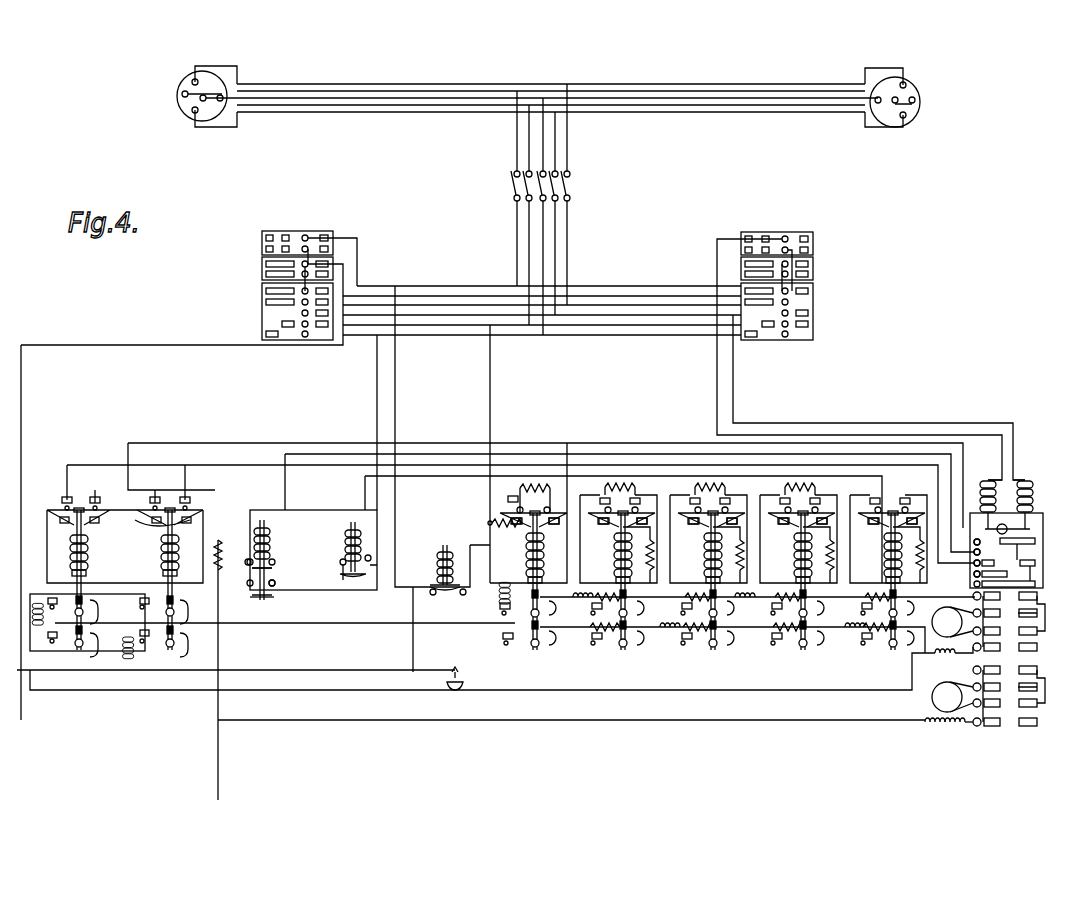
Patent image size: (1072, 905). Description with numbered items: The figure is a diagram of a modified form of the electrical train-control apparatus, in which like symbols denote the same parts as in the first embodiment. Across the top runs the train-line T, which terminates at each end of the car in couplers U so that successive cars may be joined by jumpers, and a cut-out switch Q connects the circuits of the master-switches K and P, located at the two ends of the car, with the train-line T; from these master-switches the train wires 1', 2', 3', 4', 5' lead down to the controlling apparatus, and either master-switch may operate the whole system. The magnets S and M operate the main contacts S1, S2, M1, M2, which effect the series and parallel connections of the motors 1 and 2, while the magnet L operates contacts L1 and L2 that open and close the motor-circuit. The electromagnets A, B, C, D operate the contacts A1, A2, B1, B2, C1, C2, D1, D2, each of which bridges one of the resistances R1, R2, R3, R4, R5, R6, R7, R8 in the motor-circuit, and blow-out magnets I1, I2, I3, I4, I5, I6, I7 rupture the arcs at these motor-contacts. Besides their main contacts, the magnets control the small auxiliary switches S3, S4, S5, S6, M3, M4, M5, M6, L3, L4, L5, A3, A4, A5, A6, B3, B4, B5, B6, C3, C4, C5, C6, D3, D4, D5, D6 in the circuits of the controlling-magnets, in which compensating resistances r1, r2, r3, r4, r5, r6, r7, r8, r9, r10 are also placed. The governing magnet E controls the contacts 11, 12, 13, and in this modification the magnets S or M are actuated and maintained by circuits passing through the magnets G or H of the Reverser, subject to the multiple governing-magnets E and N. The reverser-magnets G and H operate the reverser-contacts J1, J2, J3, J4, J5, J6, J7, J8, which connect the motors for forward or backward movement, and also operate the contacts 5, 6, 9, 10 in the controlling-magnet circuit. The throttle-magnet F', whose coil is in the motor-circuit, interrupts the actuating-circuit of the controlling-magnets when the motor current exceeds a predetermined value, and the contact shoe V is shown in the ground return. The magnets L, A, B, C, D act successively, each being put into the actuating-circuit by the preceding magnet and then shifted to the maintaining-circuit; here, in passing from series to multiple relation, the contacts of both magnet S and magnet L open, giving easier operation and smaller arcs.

The train-line T is at (551, 87).
The couplers U is at (549, 96).
The cut-out switch Q is at (549, 209).
The master-switch K is at (189, 275).
The master-switch P is at (775, 273).
The train wire 1' is at (402, 428).
The train wire 2' is at (487, 447).
The train wire 3' is at (371, 415).
The train wire 4' is at (853, 385).
The train wire 5' is at (876, 391).
The magnet S is at (125, 579).
The magnet M is at (169, 579).
The multiple governing-magnet N is at (312, 555).
The automatic multiple governing magnet E is at (356, 551).
The throttle-magnet F' is at (436, 600).
The contact shoe V is at (459, 678).
The reverser-magnet G is at (603, 652).
The reverser-magnet H is at (1031, 505).
The magnet L is at (528, 578).
The electromagnet A is at (618, 572).
The electromagnet B is at (708, 572).
The electromagnet C is at (798, 572).
The electromagnet D is at (888, 572).
The motor 1 is at (952, 630).
The motor 2 is at (949, 702).
The reverser Reverser is at (1000, 628).
The contact 11 is at (262, 604).
The contact 12 is at (276, 584).
The contact 13 is at (275, 570).
The reverser contact 5 is at (972, 549).
The contact 6 is at (971, 537).
The contact 9 is at (966, 582).
The contact 10 is at (962, 570).
The compensating resistance r1 is at (535, 494).
The compensating resistance r2 is at (620, 484).
The compensating resistance r3 is at (710, 484).
The compensating resistance r4 is at (800, 484).
The compensating resistance r5 is at (646, 555).
The compensating resistance r6 is at (736, 555).
The compensating resistance r7 is at (826, 555).
The compensating resistance r8 is at (915, 555).
The compensating resistance r9 is at (224, 555).
The compensating resistance r10 is at (507, 529).
The resistance R1 is at (612, 580).
The resistance R2 is at (597, 628).
The resistance R3 is at (689, 590).
The resistance R4 is at (715, 620).
The resistance R5 is at (781, 590).
The resistance R6 is at (775, 622).
The resistance R7 is at (872, 590).
The resistance R8 is at (894, 622).
The blow-out magnet I1 is at (574, 605).
The blow-out magnet I2 is at (666, 635).
The blow-out magnet I3 is at (745, 605).
The blow-out magnet I4 is at (848, 638).
The blow-out magnet I5 is at (22, 614).
The blow-out magnet I6 is at (126, 651).
The blow-out magnet I7 is at (509, 593).
The reverser-contact J1 is at (1005, 717).
The reverser-contact J2 is at (1005, 698).
The reverser-contact J3 is at (1005, 682).
The reverser-contact J4 is at (1005, 665).
The reverser-contact J5 is at (1005, 642).
The reverser-contact J6 is at (1005, 626).
The reverser-contact J7 is at (1005, 608).
The reverser-contact J8 is at (1005, 591).
The main contact S1 is at (59, 601).
The main contact S2 is at (47, 644).
The auxiliary switch S3 is at (59, 526).
The auxiliary switch S4 is at (60, 499).
The auxiliary switch S5 is at (99, 526).
The auxiliary switch S6 is at (102, 499).
The main contact M1 is at (133, 601).
The main contact M2 is at (152, 634).
The auxiliary switch M3 is at (144, 525).
The auxiliary switch M4 is at (146, 499).
The auxiliary switch M5 is at (194, 526).
The auxiliary switch M6 is at (193, 499).
The contact L1 is at (512, 608).
The contact L2 is at (497, 642).
The auxiliary switch L3 is at (535, 535).
The auxiliary switch L4 is at (506, 494).
The auxiliary switch L5 is at (556, 528).
The contact A1 is at (590, 610).
The contact A2 is at (588, 643).
The auxiliary switch A3 is at (596, 526).
The auxiliary switch A4 is at (608, 495).
The auxiliary switch A5 is at (654, 526).
The auxiliary switch A6 is at (644, 495).
The contact B1 is at (680, 610).
The contact B2 is at (680, 644).
The auxiliary switch B3 is at (687, 526).
The auxiliary switch B4 is at (698, 495).
The auxiliary switch B5 is at (744, 526).
The auxiliary switch B6 is at (734, 495).
The contact C1 is at (769, 610).
The contact C2 is at (769, 644).
The auxiliary switch C3 is at (777, 526).
The auxiliary switch C4 is at (788, 495).
The auxiliary switch C5 is at (834, 526).
The auxiliary switch C6 is at (824, 495).
The contact D1 is at (858, 610).
The contact D2 is at (861, 648).
The auxiliary switch D3 is at (867, 526).
The auxiliary switch D4 is at (878, 495).
The auxiliary switch D5 is at (919, 526).
The auxiliary switch D6 is at (914, 495).